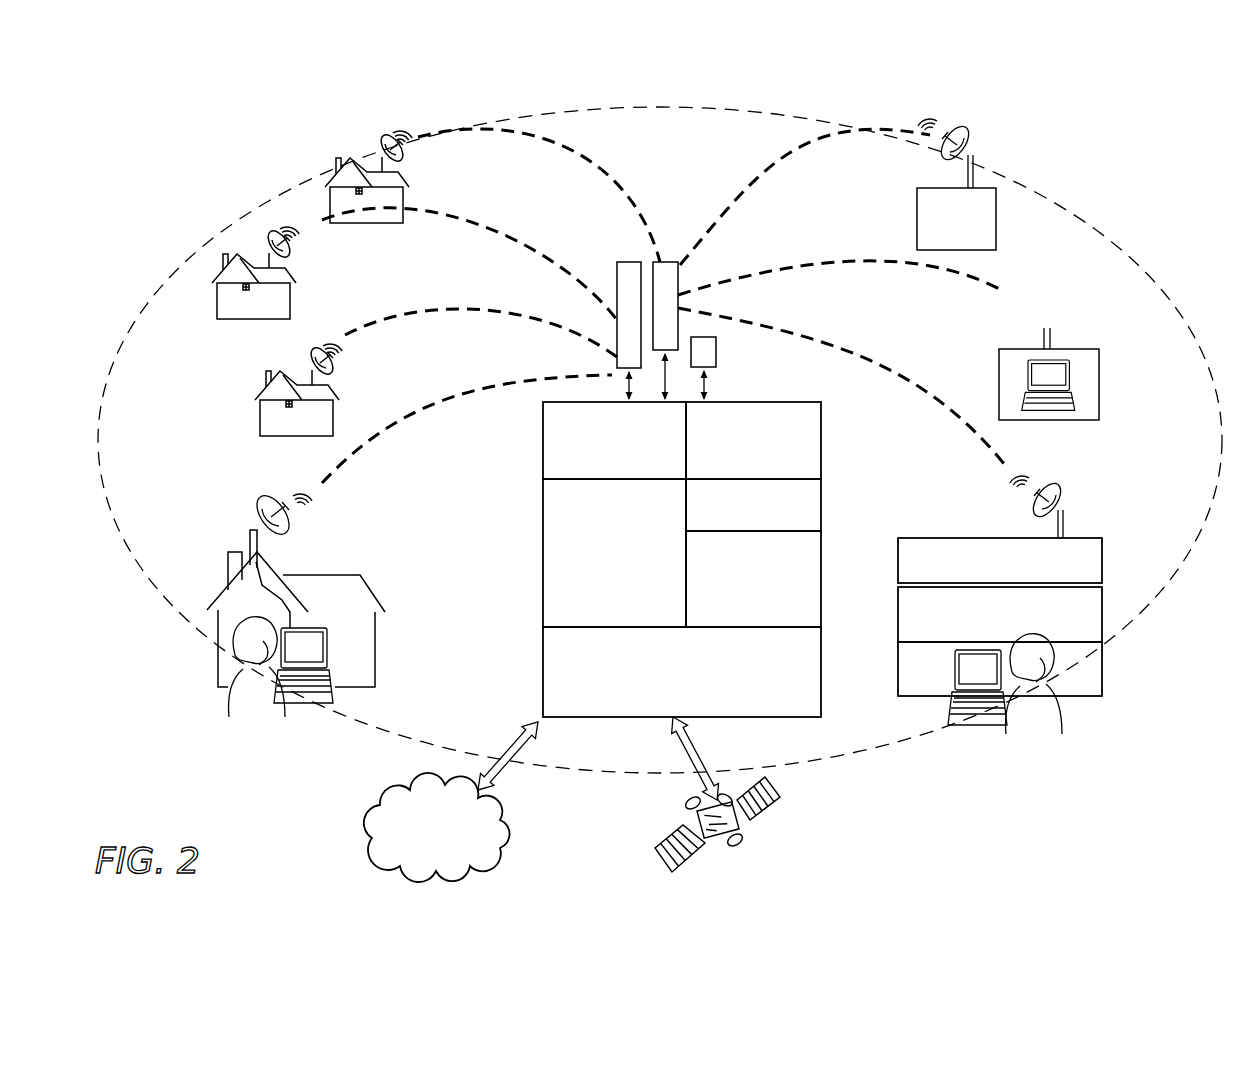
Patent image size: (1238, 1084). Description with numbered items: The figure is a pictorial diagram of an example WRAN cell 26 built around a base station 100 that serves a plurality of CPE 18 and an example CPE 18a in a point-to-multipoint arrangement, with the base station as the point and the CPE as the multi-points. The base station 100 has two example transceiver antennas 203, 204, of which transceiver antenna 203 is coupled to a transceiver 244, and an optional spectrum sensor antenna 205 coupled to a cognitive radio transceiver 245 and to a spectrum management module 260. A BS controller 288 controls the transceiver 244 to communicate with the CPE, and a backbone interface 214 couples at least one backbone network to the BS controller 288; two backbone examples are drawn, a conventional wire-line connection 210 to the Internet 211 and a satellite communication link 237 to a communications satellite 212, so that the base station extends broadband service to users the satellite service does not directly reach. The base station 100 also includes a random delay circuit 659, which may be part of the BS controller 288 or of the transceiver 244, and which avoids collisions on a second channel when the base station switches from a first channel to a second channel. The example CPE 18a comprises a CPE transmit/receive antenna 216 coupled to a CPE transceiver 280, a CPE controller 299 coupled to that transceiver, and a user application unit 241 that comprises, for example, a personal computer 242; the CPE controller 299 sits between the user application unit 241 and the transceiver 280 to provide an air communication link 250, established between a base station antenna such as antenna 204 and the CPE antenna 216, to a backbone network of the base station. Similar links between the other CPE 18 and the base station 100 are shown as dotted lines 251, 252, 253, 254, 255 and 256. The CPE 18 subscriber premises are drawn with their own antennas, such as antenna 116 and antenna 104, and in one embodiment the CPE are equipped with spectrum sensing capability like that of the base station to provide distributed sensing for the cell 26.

The cell 26 is at (200, 240).
The CPE 18 is at (332, 192).
The subscriber antenna 116 is at (248, 496).
The antenna 104 is at (972, 128).
The CPE transmit/receive antenna 216 is at (1070, 487).
The communication link 253 is at (582, 150).
The communication link 252 is at (778, 166).
The communication link 254 is at (468, 214).
The communication link 255 is at (445, 302).
The communication link 256 is at (436, 396).
The communication link 251 is at (818, 260).
The air communication link 250 is at (862, 338).
The transceiver antenna 203 is at (618, 262).
The base station transceiver antenna 204 is at (672, 262).
The spectrum sensor antenna 205 is at (717, 350).
The base station 100 is at (684, 621).
The transceiver 244 is at (542, 442).
The cognitive radio transceiver 245 is at (822, 434).
The BS controller 288 is at (542, 535).
The spectrum management module 260 is at (822, 506).
The random delay circuit 659 is at (822, 582).
The backbone interface 214 is at (822, 684).
The wire-line connection 210 is at (520, 743).
The Internet 211 is at (366, 826).
The satellite communication link 237 is at (700, 752).
The communications satellite 212 is at (765, 822).
The CPE 18a is at (1067, 671).
The CPE transceiver 280 is at (1102, 557).
The CPE controller 299 is at (1102, 614).
The user application unit 241 is at (1102, 676).
The personal computer 242 is at (962, 700).